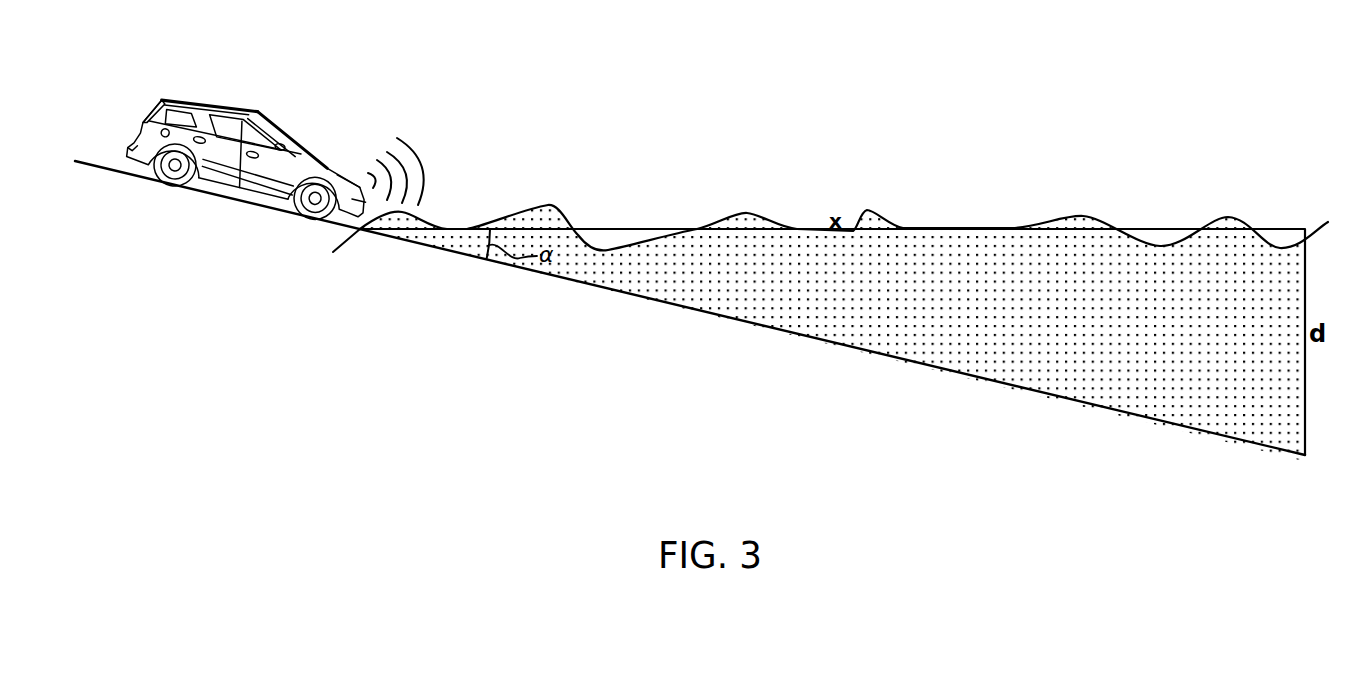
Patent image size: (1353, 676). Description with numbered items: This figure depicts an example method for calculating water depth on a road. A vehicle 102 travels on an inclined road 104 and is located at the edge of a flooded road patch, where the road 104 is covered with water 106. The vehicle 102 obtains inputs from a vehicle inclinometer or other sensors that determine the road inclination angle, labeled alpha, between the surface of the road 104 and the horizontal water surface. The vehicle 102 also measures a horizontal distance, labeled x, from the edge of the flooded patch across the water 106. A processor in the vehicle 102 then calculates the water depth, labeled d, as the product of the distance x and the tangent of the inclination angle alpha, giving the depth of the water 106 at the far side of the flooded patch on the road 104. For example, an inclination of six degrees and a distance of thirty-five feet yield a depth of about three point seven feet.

The vehicle 102 is at (223, 103).
The road 104 is at (795, 333).
The water 106 is at (1012, 344).